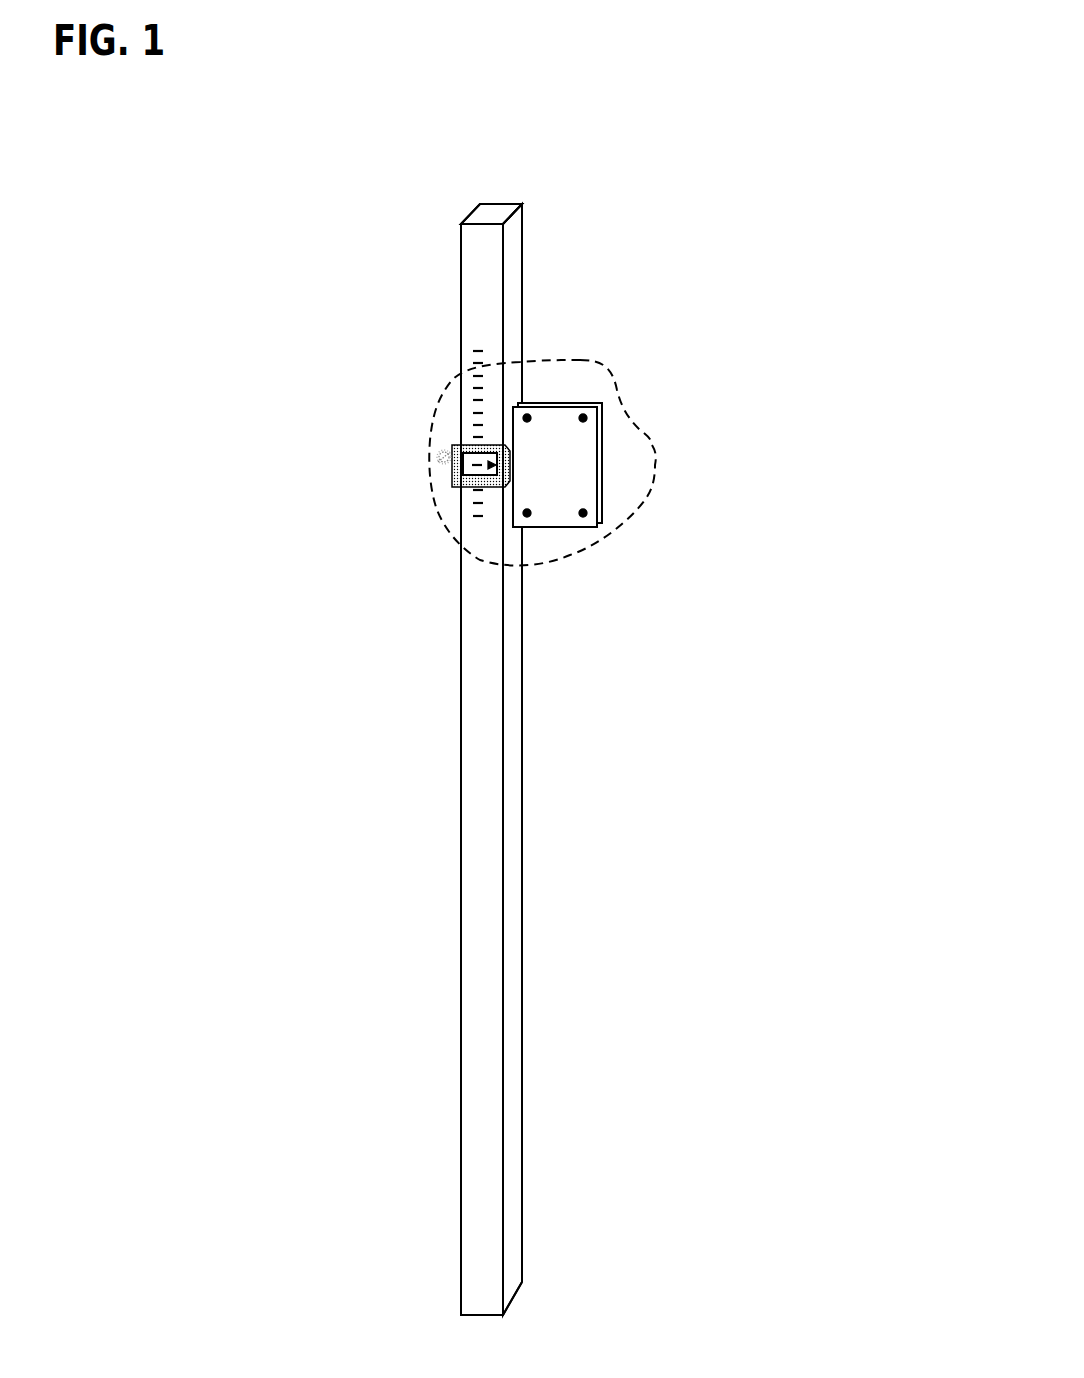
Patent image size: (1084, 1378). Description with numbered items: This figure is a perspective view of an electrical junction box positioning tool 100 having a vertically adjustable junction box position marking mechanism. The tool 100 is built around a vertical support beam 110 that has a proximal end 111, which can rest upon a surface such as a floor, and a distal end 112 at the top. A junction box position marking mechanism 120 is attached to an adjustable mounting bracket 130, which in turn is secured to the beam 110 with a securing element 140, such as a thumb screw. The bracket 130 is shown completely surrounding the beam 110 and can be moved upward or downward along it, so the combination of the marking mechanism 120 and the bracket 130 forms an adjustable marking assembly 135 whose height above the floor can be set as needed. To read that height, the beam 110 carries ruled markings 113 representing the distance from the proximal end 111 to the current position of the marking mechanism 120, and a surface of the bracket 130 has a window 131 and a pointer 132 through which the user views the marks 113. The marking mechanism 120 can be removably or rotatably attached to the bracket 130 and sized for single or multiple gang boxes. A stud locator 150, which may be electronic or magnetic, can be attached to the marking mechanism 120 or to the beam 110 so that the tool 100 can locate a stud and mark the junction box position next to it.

The electrical junction box positioning tool 100 is at (536, 676).
The vertical support beam 110 is at (505, 725).
The proximal end 111 is at (503, 1315).
The distal end 112 is at (488, 213).
The ruled markings 113 is at (473, 356).
The junction box position marking mechanism 120 is at (603, 492).
The adjustable mounting bracket 130 is at (453, 487).
The window 131 is at (477, 447).
The pointer 132 is at (490, 465).
The adjustable marking assembly 135 is at (655, 455).
The securing element 140 is at (440, 458).
The stud locator 150 is at (350, 282).